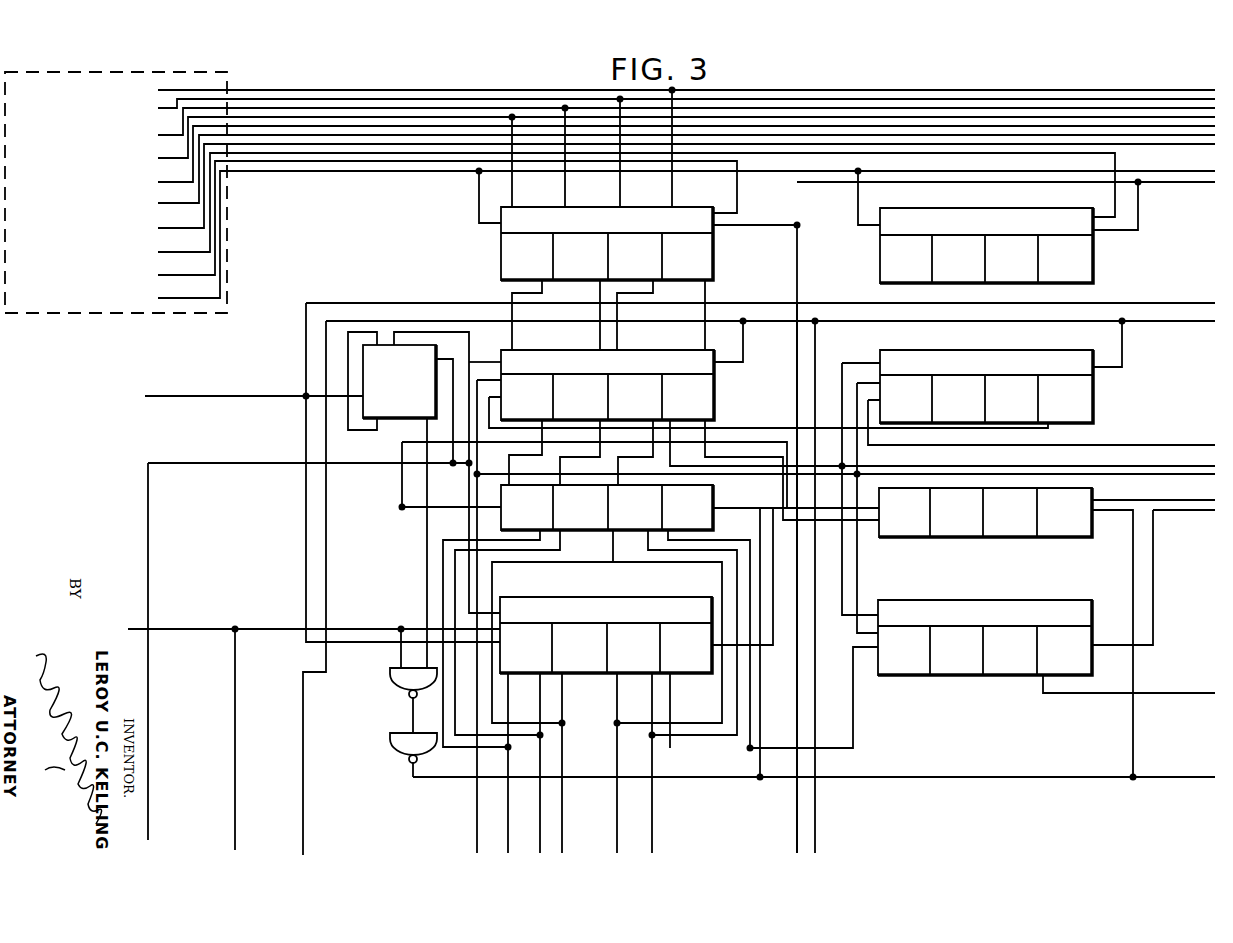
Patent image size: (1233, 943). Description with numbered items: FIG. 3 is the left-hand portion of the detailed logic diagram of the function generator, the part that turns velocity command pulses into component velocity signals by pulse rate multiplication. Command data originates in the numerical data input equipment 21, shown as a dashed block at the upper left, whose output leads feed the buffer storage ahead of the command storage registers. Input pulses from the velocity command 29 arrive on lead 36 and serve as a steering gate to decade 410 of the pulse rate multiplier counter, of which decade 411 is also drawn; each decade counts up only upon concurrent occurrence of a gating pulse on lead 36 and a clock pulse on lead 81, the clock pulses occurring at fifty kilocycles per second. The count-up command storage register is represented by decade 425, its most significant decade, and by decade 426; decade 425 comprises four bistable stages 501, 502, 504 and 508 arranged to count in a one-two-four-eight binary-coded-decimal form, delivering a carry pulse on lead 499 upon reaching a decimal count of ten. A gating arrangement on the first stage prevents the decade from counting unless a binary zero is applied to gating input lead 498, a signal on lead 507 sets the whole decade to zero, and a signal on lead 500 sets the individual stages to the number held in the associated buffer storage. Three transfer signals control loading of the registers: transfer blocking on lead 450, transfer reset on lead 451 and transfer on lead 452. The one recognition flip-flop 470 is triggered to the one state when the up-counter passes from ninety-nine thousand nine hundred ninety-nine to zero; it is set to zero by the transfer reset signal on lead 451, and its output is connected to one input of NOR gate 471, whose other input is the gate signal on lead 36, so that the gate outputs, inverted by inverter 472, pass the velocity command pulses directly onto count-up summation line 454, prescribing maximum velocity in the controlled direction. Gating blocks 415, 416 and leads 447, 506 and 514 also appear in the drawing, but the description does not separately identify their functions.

The numerical data input equipment 21 is at (106, 72).
The velocity command 29 is at (222, 694).
The velocity command lead 36 is at (218, 632).
The clock pulse line 81 is at (193, 399).
The decade of PRM counter 410 is at (562, 600).
The decade of PRM counter 411 is at (950, 602).
The gating circuit 415 is at (715, 505).
The gating circuit 416 is at (1094, 498).
The count-up decade 425 is at (715, 400).
The decade of count-up command storage register 426 is at (1094, 400).
The output line 447 is at (795, 810).
The transfer blocking lead 450 is at (475, 812).
The transfer reset lead 451 is at (148, 815).
The transfer lead 452 is at (1197, 324).
The count-up summation line 454 is at (944, 778).
The one recognition flip-flop 470 is at (393, 343).
The NOR gate 471 is at (392, 681).
The inverter 472 is at (392, 742).
The gating input lead 498 is at (478, 455).
The carry pulse lead 499 is at (403, 322).
The set lead 500 is at (746, 354).
The bistable stage 501 is at (537, 375).
The bistable stage 502 is at (590, 382).
The bistable stage 504 is at (644, 382).
The line 506 is at (778, 428).
The zero-set lead 507 is at (500, 346).
The bistable stage 508 is at (687, 385).
The connection lines 514 is at (703, 313).